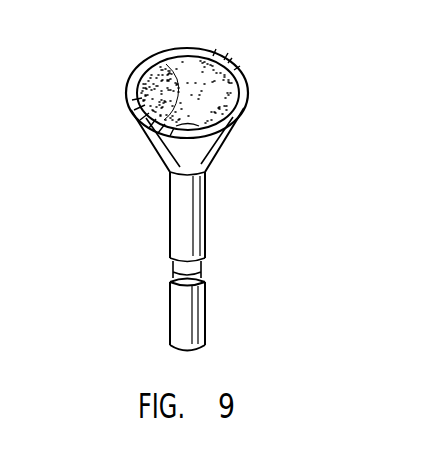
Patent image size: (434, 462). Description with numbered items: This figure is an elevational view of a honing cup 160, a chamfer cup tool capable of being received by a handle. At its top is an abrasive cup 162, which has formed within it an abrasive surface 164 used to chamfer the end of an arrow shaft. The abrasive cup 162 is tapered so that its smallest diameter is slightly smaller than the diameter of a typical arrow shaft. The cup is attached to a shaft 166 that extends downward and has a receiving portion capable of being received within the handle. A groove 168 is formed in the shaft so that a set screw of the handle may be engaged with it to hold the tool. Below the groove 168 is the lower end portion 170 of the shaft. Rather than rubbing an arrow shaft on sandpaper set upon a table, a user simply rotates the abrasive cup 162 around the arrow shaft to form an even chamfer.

The honing cup 160 is at (268, 67).
The abrasive cup 162 is at (207, 160).
The abrasive surface 164 is at (146, 69).
The shaft 166 is at (200, 222).
The groove 168 is at (200, 268).
The handle end section 170 is at (188, 317).